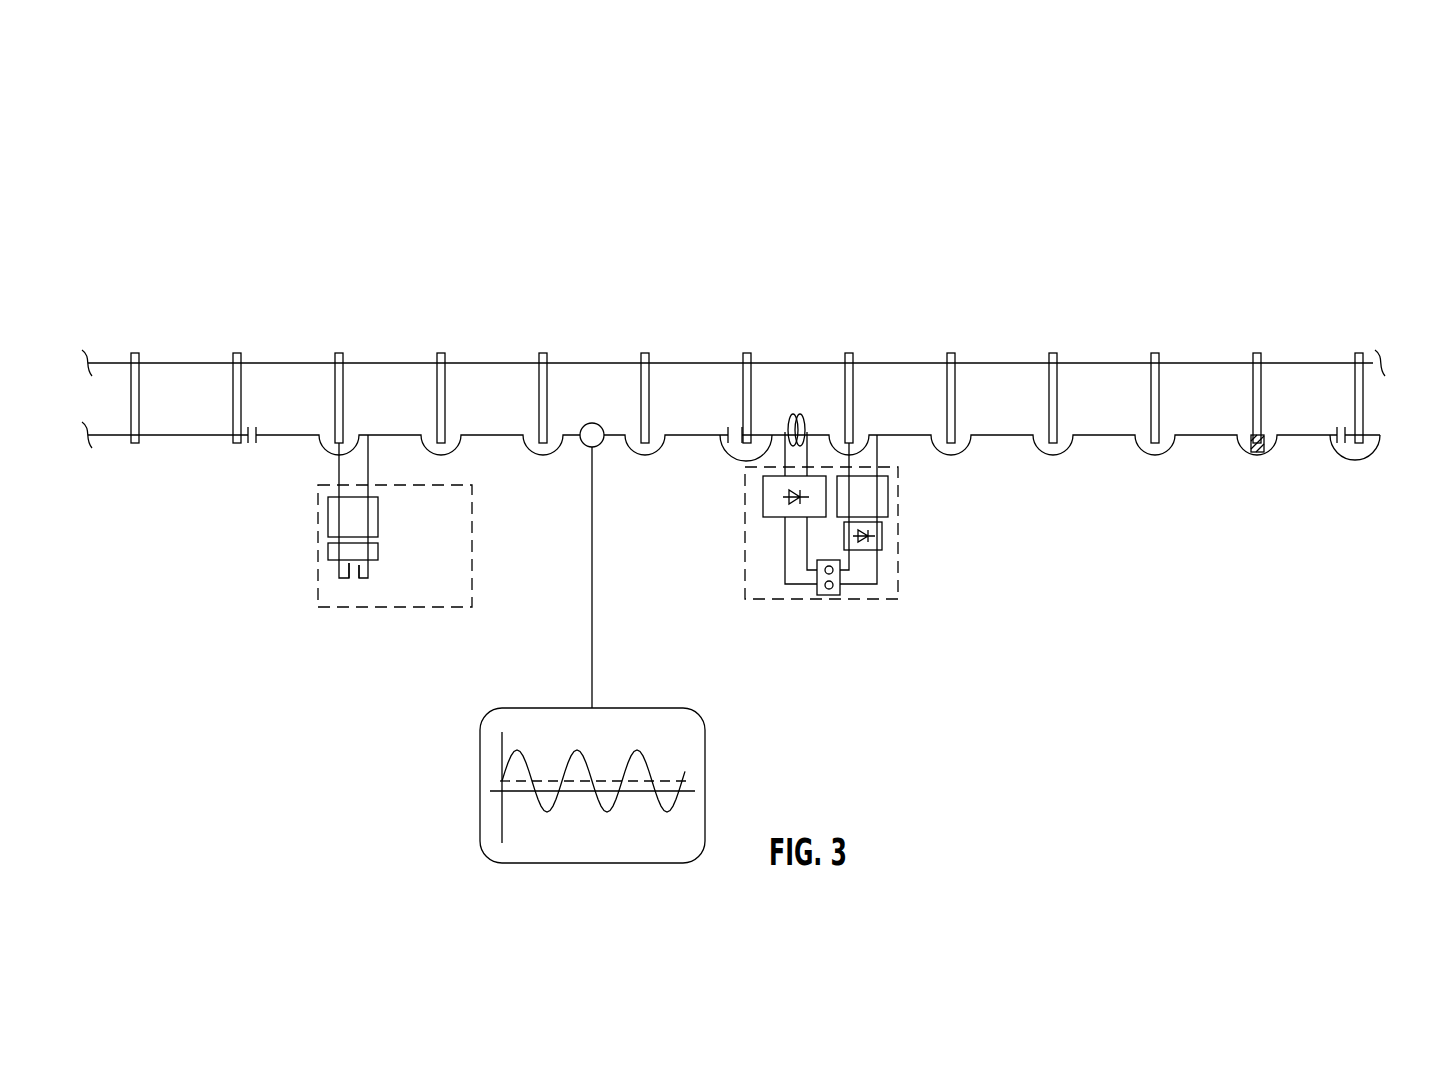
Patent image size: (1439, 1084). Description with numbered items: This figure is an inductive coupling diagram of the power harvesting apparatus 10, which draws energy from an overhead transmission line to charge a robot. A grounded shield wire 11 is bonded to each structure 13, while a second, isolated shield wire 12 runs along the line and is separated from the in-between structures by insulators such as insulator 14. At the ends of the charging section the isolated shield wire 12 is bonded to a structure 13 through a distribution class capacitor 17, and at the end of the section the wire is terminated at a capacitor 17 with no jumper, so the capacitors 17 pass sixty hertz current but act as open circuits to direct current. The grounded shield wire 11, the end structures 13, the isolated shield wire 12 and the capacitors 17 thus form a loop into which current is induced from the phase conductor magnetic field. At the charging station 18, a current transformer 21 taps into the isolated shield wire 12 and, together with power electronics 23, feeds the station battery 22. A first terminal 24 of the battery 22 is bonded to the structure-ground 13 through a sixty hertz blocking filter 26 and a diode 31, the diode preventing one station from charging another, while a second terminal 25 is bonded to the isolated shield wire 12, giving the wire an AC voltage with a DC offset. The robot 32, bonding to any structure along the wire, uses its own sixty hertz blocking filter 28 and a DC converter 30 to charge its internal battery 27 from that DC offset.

The apparatus for harvesting power from an overhead transmission conductor 10 is at (972, 195).
The shield wire 11 is at (484, 362).
The isolated shield wire 12 is at (684, 437).
The structure 13 is at (641, 355).
The insulator 14 is at (1250, 452).
The capacitor 17 is at (256, 442).
The charging station 18 is at (902, 499).
The current transformer 21 is at (793, 413).
The battery 22 is at (830, 597).
The power electronics 23 is at (757, 512).
The first terminal 24 is at (853, 445).
The second terminal 25 is at (880, 438).
The 60 Hz blocking filter 26 is at (888, 504).
The robot battery 27 is at (350, 588).
The 60 Hz blocking filter 28 is at (328, 521).
The DC converter 30 is at (328, 553).
The diode 31 is at (882, 548).
The robot 32 is at (314, 558).